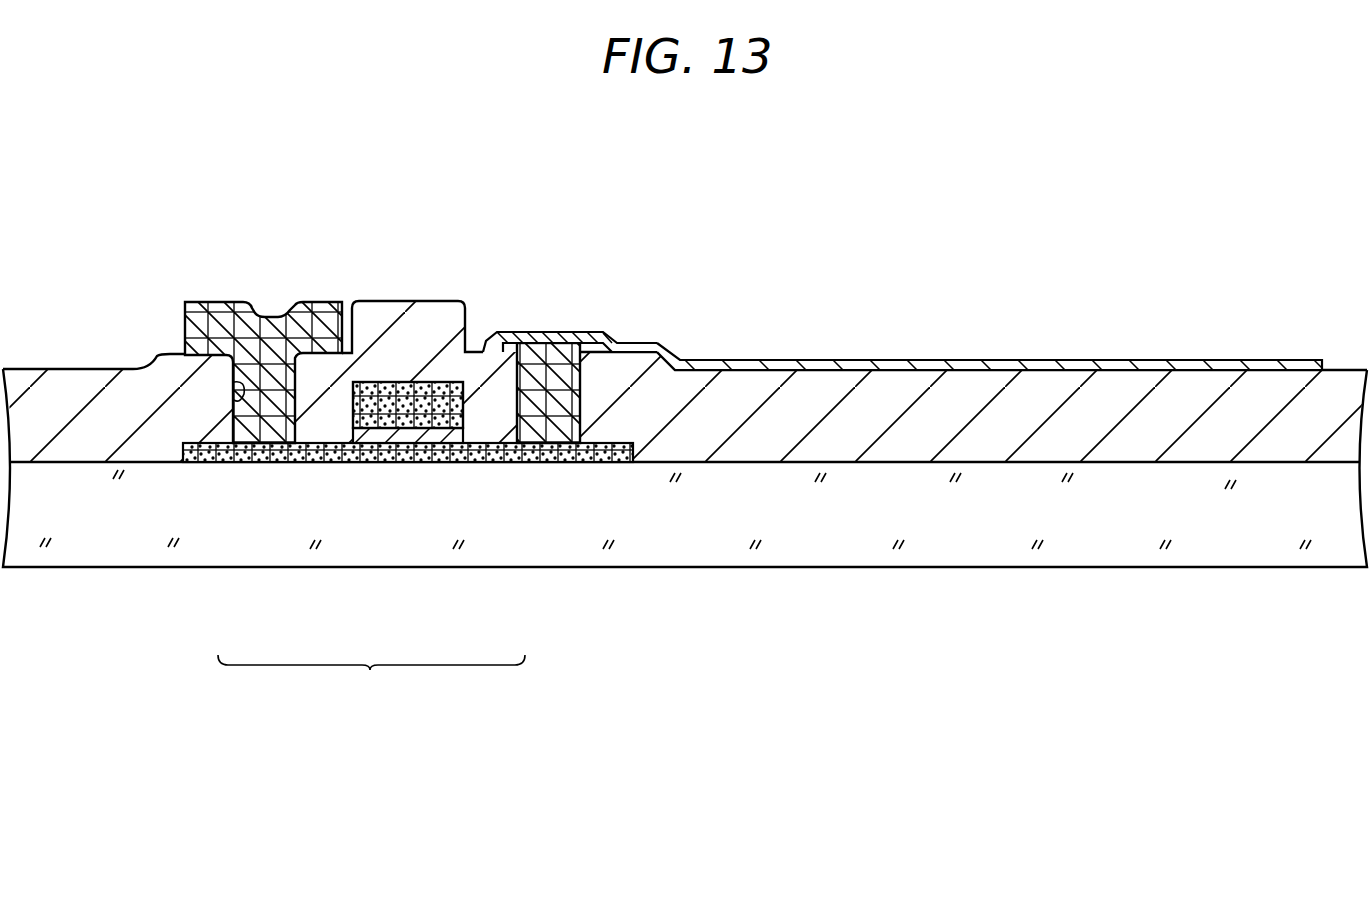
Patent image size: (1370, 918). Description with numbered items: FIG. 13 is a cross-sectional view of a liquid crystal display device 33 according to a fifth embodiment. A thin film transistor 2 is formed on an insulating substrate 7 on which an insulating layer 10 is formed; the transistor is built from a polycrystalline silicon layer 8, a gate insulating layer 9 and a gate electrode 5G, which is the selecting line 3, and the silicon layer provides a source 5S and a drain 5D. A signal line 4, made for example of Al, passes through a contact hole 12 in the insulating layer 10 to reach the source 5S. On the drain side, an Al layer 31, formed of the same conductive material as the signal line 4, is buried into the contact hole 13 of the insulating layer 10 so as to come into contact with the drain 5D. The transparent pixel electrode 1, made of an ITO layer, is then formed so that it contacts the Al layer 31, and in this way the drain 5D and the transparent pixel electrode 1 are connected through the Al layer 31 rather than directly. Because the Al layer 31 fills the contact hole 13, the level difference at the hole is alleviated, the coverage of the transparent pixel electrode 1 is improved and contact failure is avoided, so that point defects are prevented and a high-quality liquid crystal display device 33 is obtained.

The transparent pixel electrode 1 is at (993, 362).
The thin film transistor 2 is at (381, 704).
The selecting line 3 is at (408, 405).
The signal line 4 is at (237, 313).
The source 5S is at (240, 453).
The gate electrode 5G is at (372, 417).
The drain 5D is at (530, 445).
The insulating substrate 7 is at (963, 555).
The polycrystalline silicon layer 8 is at (437, 447).
The gate insulating layer 9 is at (390, 437).
The insulating layer 10 is at (1220, 442).
The contact hole 12 is at (238, 388).
The contact hole 13 is at (570, 400).
The Al layer 31 is at (568, 350).
The liquid crystal display device 33 is at (666, 208).